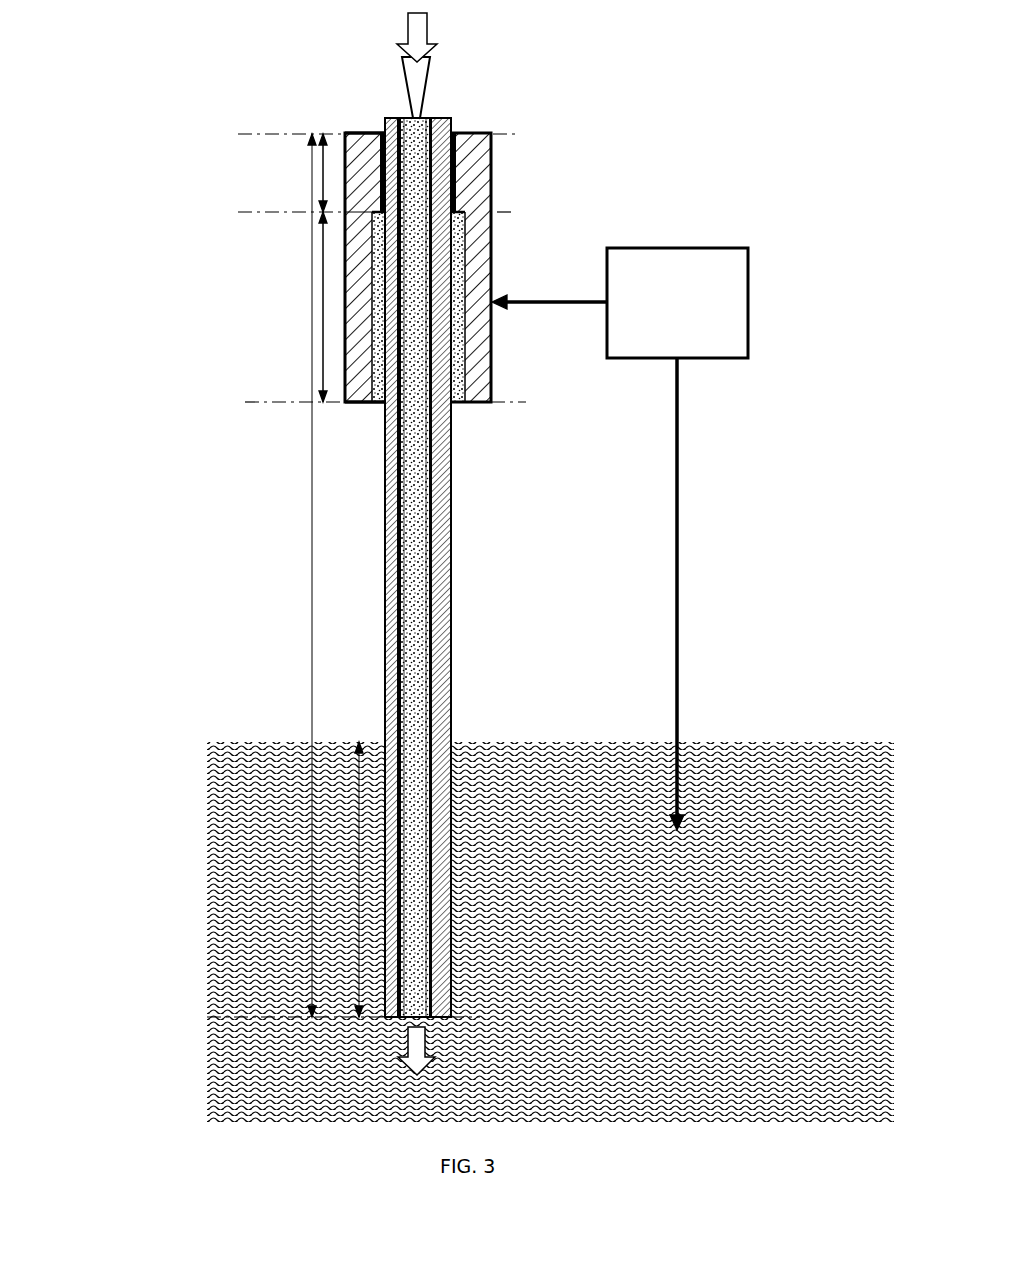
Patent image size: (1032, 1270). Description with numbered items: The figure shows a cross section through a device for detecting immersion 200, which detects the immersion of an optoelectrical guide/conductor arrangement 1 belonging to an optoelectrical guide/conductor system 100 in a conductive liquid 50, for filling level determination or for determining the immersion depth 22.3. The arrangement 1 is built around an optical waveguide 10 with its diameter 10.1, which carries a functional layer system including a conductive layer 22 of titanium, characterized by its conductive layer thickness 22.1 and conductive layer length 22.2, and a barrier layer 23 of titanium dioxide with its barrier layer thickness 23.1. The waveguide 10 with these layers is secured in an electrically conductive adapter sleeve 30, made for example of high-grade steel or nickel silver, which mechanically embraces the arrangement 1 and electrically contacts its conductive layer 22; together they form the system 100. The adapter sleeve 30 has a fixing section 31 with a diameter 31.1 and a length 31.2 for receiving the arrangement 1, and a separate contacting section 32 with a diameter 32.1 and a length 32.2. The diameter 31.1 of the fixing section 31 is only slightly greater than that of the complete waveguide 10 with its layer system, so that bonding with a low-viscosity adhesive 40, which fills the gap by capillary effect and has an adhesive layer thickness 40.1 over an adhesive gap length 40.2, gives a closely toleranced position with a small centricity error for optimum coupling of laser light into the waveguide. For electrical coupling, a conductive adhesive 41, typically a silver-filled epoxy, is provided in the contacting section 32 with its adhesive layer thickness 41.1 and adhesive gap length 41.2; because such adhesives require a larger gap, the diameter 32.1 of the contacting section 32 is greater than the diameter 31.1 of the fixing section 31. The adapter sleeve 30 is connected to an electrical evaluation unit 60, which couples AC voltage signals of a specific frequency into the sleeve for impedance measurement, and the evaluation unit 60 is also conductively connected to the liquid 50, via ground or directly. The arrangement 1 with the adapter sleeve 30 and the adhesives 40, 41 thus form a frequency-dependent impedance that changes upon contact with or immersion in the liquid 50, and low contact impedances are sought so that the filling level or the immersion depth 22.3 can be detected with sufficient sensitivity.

The optoelectrical guide/conductor arrangement 1 is at (307, 567).
The optical waveguide 10 is at (410, 470).
The diameter of optical waveguide 10.1 is at (417, 507).
The conductive layer 22 is at (385, 590).
The conductive layer thickness 22.1 is at (385, 608).
The conductive layer length 22.2 is at (310, 642).
The immersion depth 22.3 is at (362, 912).
The barrier layer 23 is at (385, 713).
The barrier layer thickness 23.1 is at (385, 692).
The adapter sleeve 30 is at (455, 264).
The fixing section 31 is at (342, 146).
The diameter of fixing section 31.1 is at (342, 165).
The length of fixing section 31.2 is at (323, 178).
The contacting section 32 is at (352, 262).
The diameter of contacting section 32.1 is at (345, 291).
The length of contacting section 32.2 is at (323, 317).
The adhesive 40 is at (464, 277).
The adhesive layer thickness 40.1 is at (492, 183).
The adhesive gap length 40.2 is at (216, 173).
The conductive adhesive 41 is at (345, 362).
The conductive adhesive layer thickness 41.1 is at (345, 378).
The conductive adhesive gap length 41.2 is at (216, 307).
The conductive liquid 50 is at (243, 835).
The electrical evaluation unit 60 is at (732, 332).
The optoelectrical guide/conductor system 100 is at (532, 112).
The device for detecting immersion 200 is at (742, 118).